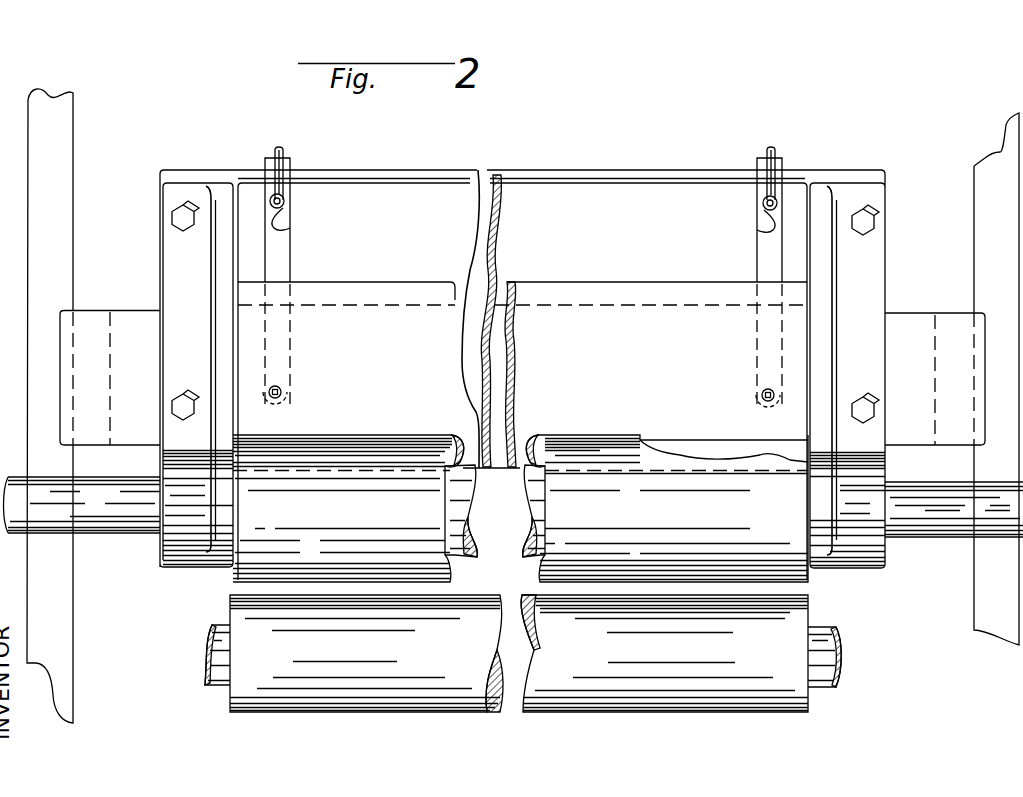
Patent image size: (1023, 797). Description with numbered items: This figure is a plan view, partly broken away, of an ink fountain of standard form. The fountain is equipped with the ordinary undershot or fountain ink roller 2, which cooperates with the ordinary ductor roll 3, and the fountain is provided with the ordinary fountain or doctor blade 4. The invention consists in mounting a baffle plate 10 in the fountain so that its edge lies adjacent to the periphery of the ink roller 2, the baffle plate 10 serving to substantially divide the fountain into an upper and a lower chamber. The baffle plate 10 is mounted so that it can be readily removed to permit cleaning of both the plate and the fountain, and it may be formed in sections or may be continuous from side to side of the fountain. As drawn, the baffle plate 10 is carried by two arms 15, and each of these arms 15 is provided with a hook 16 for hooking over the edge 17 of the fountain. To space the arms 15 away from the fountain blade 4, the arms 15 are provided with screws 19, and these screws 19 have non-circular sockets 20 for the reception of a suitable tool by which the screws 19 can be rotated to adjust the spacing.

The fountain ink roller 2 is at (603, 455).
The ductor roll 3 is at (620, 695).
The fountain or doctor blade 4 is at (586, 200).
The baffle plate 10 is at (440, 268).
The arms 15 is at (283, 259).
The hooks 16 is at (283, 163).
The edge of the fountain 17 is at (430, 150).
The screws 19 is at (284, 203).
The non-circular sockets 20 is at (290, 228).